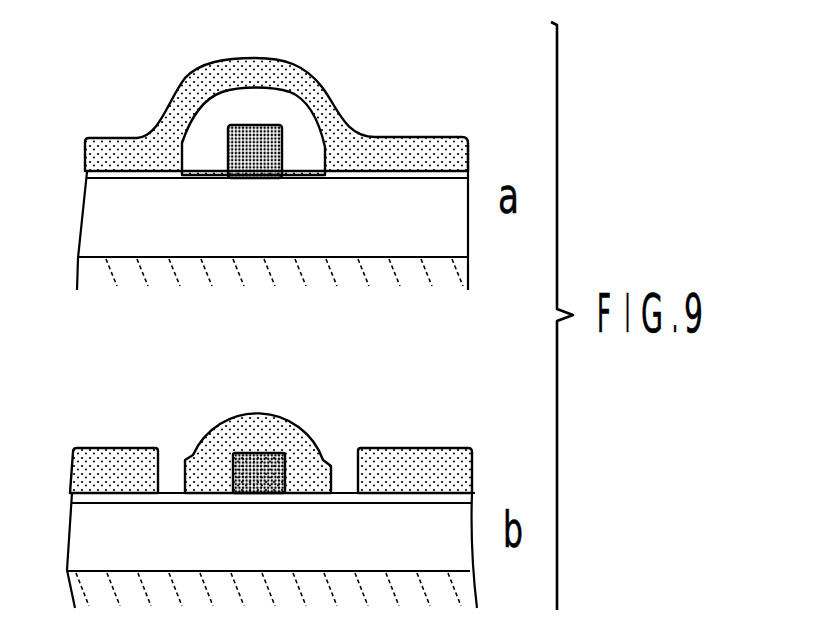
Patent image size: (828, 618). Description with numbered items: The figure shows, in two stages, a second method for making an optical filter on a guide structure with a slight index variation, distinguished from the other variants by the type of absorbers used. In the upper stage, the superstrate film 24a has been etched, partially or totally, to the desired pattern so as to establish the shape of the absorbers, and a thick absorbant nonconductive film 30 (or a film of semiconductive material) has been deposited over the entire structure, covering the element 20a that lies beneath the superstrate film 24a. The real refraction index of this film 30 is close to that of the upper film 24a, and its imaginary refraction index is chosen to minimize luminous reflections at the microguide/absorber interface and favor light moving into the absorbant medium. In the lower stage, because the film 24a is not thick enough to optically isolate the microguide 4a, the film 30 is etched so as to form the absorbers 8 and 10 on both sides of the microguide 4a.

The absorbant nonconductive film 30 is at (310, 70).
The superstrate film 24a is at (278, 116).
The electrode 20a is at (285, 149).
The absorber 8 is at (121, 461).
The absorber 10 is at (418, 468).
The microguide 4a is at (293, 480).